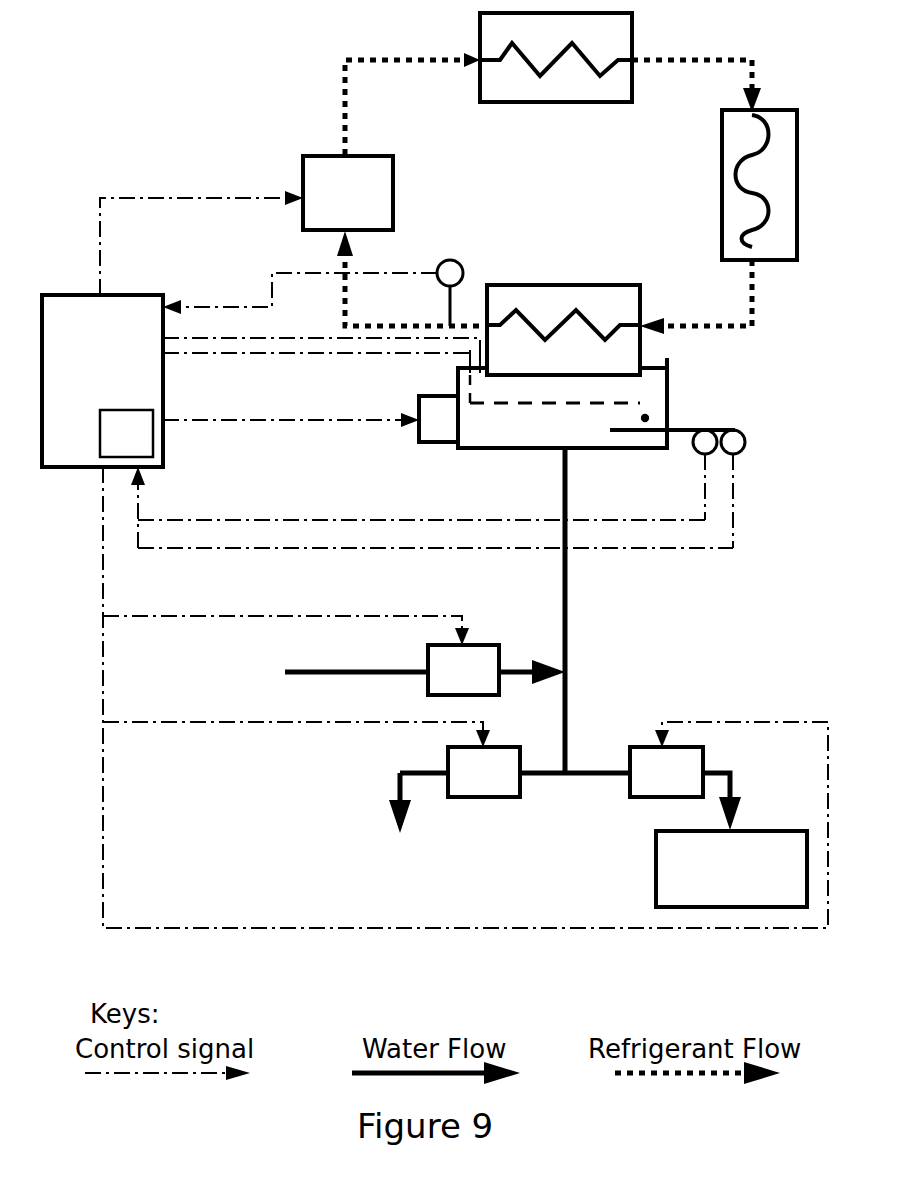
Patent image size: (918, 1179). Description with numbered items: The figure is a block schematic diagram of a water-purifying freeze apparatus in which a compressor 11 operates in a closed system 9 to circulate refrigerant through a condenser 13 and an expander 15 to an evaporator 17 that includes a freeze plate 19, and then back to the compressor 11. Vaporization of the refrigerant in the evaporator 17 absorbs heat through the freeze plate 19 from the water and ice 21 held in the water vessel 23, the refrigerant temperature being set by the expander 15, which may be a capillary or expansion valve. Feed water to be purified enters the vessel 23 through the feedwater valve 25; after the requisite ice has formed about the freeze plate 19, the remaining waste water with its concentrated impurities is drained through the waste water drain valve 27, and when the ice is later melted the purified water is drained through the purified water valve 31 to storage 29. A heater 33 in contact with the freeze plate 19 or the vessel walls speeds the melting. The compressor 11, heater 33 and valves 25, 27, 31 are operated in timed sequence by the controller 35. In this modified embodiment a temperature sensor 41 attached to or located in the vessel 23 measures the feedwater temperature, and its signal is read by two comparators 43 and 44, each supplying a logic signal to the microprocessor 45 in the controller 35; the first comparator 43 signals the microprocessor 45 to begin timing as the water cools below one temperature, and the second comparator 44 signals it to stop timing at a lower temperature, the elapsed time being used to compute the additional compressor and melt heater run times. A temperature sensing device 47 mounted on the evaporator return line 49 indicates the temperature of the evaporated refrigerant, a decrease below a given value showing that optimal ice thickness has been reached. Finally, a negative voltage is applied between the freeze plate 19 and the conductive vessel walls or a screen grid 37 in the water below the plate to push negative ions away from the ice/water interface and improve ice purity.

The closed system 9 is at (586, 197).
The compressor 11 is at (393, 182).
The condenser 13 is at (572, 102).
The expander 15 is at (722, 233).
The evaporator 17 is at (548, 285).
The freeze plate 19 is at (640, 375).
The water (and ice) 21 is at (645, 418).
The water vessel 23 is at (585, 448).
The feedwater valve 25 is at (428, 672).
The waste water drain valve 27 is at (482, 797).
The storage 29 is at (656, 855).
The purified water valve 31 is at (642, 797).
The heater 33 is at (418, 438).
The controller 35 is at (140, 295).
The screen grid 37 is at (640, 403).
The temperature sensor 41 is at (625, 430).
The first comparator 43 is at (710, 454).
The second comparator 44 is at (745, 445).
The microprocessor 45 is at (133, 410).
The temperature sensing device 47 is at (380, 273).
The evaporator return line 49 is at (417, 326).